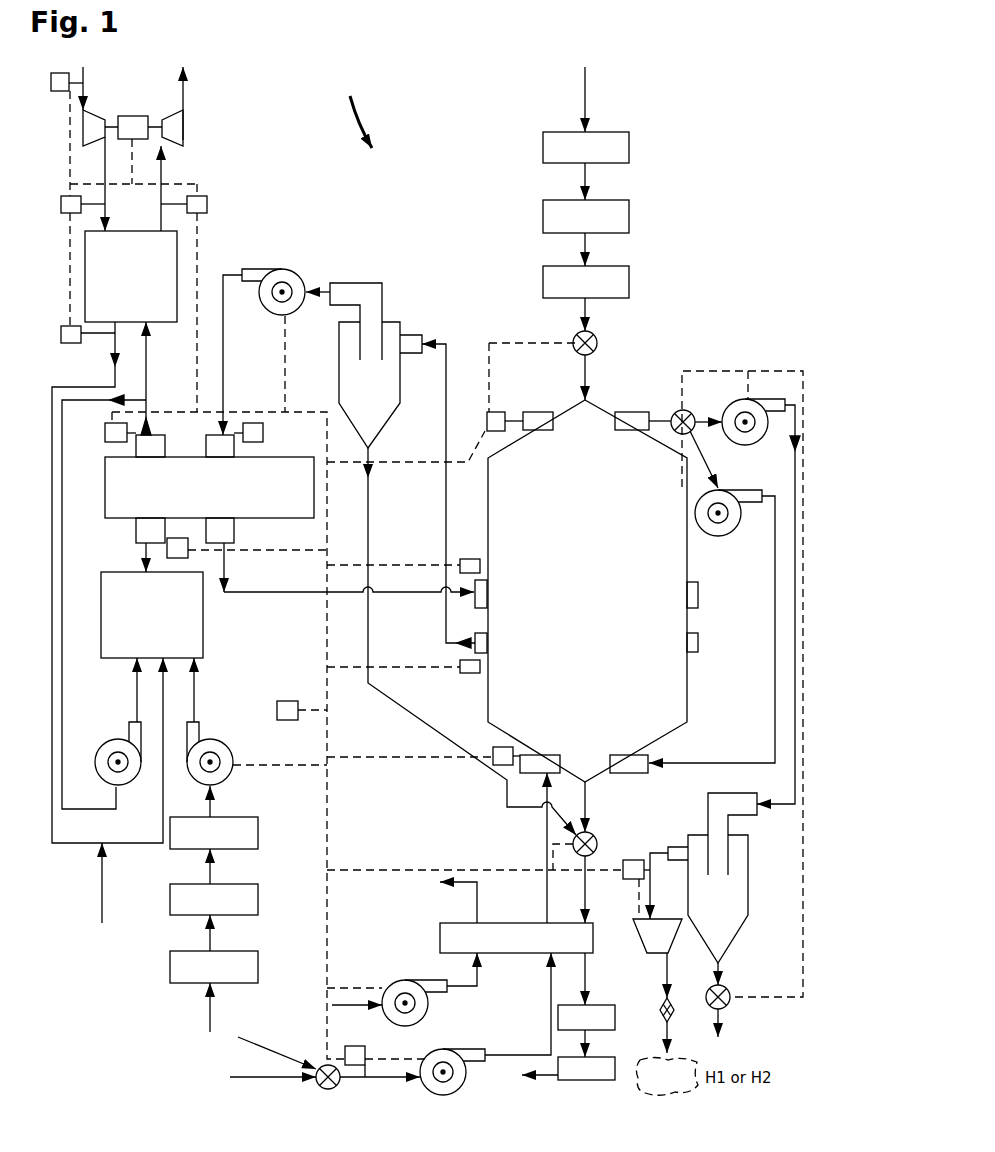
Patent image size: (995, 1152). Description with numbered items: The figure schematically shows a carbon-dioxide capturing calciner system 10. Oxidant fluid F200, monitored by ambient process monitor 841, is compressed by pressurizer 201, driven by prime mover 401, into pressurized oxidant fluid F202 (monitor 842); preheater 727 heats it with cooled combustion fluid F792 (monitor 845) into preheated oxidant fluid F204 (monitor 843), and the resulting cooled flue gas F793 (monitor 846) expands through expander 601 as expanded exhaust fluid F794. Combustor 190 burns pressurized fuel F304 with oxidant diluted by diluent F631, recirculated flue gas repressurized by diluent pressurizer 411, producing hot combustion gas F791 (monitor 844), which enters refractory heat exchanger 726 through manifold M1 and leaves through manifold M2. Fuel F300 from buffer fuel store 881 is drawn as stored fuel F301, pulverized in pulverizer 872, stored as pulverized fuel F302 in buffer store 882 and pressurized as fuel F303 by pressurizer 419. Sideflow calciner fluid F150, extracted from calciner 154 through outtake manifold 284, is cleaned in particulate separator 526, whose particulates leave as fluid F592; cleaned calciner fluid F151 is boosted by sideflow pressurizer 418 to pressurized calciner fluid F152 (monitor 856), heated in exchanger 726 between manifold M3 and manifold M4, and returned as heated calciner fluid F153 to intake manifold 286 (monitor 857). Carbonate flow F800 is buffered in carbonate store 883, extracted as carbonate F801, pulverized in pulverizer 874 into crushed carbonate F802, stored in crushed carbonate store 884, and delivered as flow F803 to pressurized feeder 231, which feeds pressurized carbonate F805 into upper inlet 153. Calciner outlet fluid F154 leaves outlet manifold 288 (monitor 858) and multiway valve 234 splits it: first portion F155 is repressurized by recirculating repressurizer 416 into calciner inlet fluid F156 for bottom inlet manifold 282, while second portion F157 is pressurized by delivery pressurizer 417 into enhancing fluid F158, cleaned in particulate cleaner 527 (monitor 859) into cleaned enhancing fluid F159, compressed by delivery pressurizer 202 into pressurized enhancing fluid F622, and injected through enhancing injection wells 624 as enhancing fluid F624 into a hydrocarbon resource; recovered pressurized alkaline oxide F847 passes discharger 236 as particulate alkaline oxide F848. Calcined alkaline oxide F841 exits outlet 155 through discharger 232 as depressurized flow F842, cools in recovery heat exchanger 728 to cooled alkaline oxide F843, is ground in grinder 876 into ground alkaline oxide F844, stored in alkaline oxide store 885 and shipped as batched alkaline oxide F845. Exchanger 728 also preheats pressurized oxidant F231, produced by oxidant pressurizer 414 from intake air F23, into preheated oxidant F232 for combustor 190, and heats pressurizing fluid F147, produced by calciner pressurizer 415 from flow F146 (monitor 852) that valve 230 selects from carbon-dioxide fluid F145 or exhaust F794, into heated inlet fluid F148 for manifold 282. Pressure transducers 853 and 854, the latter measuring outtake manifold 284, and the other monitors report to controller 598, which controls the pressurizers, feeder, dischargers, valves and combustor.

The system 10 is at (352, 118).
The sensor 841 is at (55, 73).
The stream F200 is at (84, 80).
The compressor 201 is at (83, 130).
The motor 401 is at (128, 116).
The turbine 601 is at (180, 128).
The stream F794 is at (184, 94).
The stream F793 is at (163, 172).
The sensor 842 is at (61, 205).
The sensor 846 is at (207, 205).
The stream F202 is at (106, 200).
The heat exchanger 727 is at (131, 276).
The sensor 843 is at (61, 333).
The stream F204 is at (112, 385).
The stream F792 is at (148, 380).
The stream F631 is at (70, 812).
The stream F152 is at (224, 350).
The sensor 845 is at (105, 436).
The sensor 856 is at (256, 442).
The module M2 is at (150, 446).
The module M3 is at (220, 446).
The combustor 726 is at (209, 487).
The module M1 is at (150, 530).
The module M4 is at (220, 530).
The sensor 844 is at (182, 558).
The stream F791 is at (143, 566).
The mixing unit 190 is at (152, 615).
The stream F153 is at (305, 600).
The controller 598 is at (277, 713).
The blower 411 is at (110, 750).
The stream F304 is at (196, 690).
The blower 419 is at (212, 750).
The stream F303 is at (212, 804).
The treatment unit 882 is at (214, 833).
The stream F302 is at (208, 878).
The treatment unit 872 is at (214, 899).
The stream F301 is at (208, 944).
The treatment unit 881 is at (214, 967).
The stream F300 is at (208, 1020).
The stream F232 is at (100, 898).
The stream F145 is at (249, 1047).
The mixer 230 is at (334, 1086).
The stream F146 is at (370, 1080).
The sensor 852 is at (356, 1046).
The blower 415 is at (462, 1082).
The stream F147 is at (531, 1060).
The blower 414 is at (408, 985).
The stream F231 is at (476, 985).
The stream F23 is at (335, 1008).
The heat exchanger 728 is at (516, 938).
The stream F843 is at (590, 965).
The treatment unit 876 is at (586, 1017).
The stream F844 is at (592, 1038).
The treatment unit 885 is at (586, 1068).
The stream F845 is at (550, 1078).
The stream F842 is at (600, 900).
The stream F148 is at (549, 900).
The mixer 232 is at (594, 836).
The stream F841 is at (588, 812).
The reactor outlet 155 is at (548, 790).
The stream F592 is at (432, 752).
The sensor 853 is at (493, 752).
The sensor 854 is at (470, 673).
The sensor 857 is at (470, 559).
The stream F150 is at (445, 490).
The cyclone 526 is at (376, 365).
The stream F151 is at (326, 283).
The blower 418 is at (278, 272).
The reactor 154 is at (581, 591).
The reactor inlet 153 is at (583, 398).
The sensor 858 is at (493, 412).
The nozzle 288 is at (628, 412).
The stream F805 is at (583, 380).
The mixer 231 is at (594, 338).
The stream F800 is at (583, 105).
The treatment unit 883 is at (586, 147).
The stream F801 is at (583, 170).
The treatment unit 874 is at (586, 216).
The stream F802 is at (583, 242).
The treatment unit 884 is at (586, 282).
The stream F803 is at (583, 310).
The stream F154 is at (667, 418).
The mixer 234 is at (690, 433).
The stream F157 is at (719, 418).
The blower 417 is at (752, 399).
The stream F158 is at (790, 790).
The stream F155 is at (715, 482).
The blower 416 is at (725, 536).
The stream F156 is at (672, 763).
The nozzle 286 is at (698, 588).
The nozzle 284 is at (692, 652).
The nozzle 282 is at (640, 773).
The stream F847 is at (722, 964).
The mixer 236 is at (727, 994).
The stream F848 is at (727, 1025).
The cyclone 527 is at (712, 878).
The stream F159 is at (665, 848).
The sensor 859 is at (628, 860).
The hopper 202 is at (657, 936).
The stream F622 is at (668, 975).
The valve 624 is at (660, 1010).
The stream F624 is at (669, 1028).